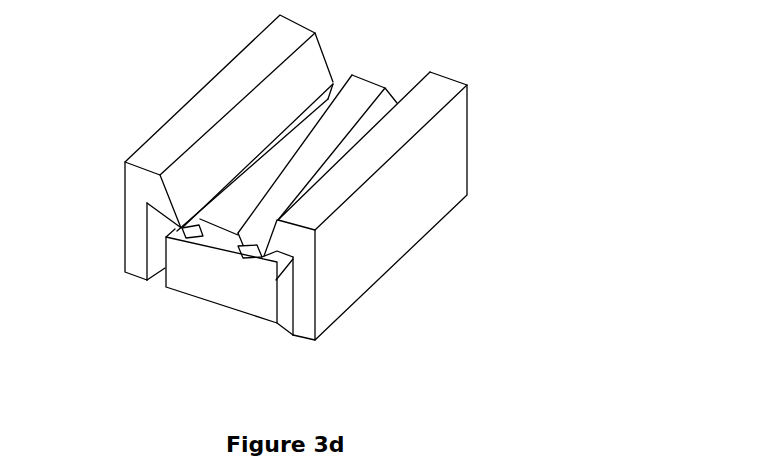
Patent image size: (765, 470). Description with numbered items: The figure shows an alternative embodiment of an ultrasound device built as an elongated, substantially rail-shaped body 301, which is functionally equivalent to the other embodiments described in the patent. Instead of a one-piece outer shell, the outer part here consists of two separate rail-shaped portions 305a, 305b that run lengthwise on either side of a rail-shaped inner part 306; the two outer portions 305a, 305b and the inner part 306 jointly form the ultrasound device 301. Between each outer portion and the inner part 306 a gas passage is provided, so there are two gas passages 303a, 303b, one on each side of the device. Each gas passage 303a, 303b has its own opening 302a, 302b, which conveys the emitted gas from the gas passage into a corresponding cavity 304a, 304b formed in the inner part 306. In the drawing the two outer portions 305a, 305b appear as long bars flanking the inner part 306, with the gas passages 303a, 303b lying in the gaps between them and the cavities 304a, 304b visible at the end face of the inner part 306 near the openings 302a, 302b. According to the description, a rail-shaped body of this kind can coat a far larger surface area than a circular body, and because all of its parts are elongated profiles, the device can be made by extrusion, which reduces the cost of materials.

The rail-shaped body 301 is at (376, 76).
The opening 302a is at (336, 84).
The opening 302b is at (402, 90).
The gas passage 303a is at (156, 284).
The gas passage 303b is at (292, 336).
The cavity 304a is at (183, 241).
The cavity 304b is at (252, 260).
The rail-shaped portion 305a is at (134, 243).
The rail-shaped portion 305b is at (303, 295).
The inner part 306 is at (220, 295).